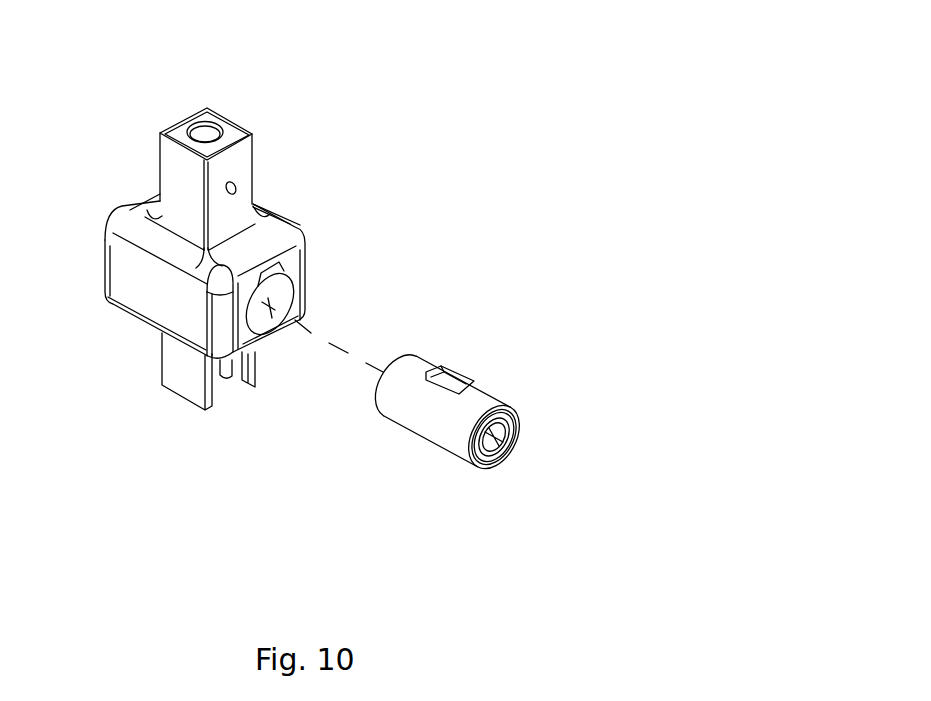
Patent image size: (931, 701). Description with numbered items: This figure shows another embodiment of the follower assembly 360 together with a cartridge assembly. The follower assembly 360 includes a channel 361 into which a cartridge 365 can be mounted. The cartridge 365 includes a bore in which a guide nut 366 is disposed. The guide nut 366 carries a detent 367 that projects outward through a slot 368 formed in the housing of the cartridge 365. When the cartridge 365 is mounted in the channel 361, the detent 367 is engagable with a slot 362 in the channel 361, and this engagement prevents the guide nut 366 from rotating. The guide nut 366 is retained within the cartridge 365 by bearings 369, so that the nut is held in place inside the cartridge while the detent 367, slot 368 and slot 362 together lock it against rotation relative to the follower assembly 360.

The follower assembly 360 is at (230, 109).
The channel 361 is at (278, 280).
The slot 362 is at (272, 293).
The cartridge 365 is at (417, 437).
The guide nut 366 is at (522, 422).
The detent 367 is at (450, 372).
The slot 368 is at (475, 383).
The bearings 369 is at (520, 420).